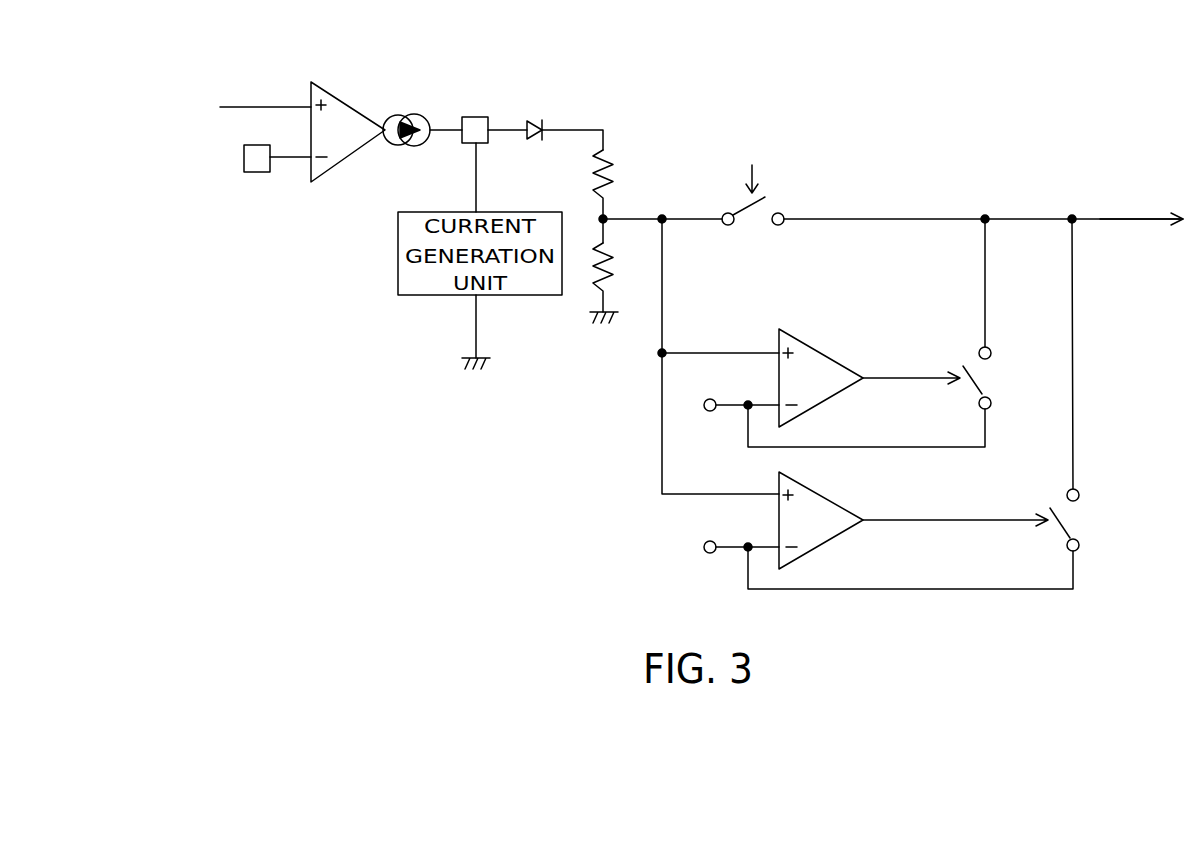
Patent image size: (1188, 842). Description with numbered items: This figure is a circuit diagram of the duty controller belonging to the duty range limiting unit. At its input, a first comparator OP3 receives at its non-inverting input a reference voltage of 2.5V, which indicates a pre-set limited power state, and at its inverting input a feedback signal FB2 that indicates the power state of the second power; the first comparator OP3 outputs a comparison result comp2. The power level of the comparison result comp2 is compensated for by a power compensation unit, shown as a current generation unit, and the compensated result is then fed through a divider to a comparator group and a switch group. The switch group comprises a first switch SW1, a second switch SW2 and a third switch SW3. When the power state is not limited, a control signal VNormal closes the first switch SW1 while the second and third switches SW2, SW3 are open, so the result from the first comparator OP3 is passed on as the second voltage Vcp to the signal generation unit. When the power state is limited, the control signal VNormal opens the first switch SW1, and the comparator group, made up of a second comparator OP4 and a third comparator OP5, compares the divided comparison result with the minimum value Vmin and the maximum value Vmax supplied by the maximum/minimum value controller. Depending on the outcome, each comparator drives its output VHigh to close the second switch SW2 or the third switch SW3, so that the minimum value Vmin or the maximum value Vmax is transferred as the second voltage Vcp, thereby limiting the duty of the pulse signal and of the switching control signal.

The first comparator OP3 is at (352, 105).
The voltage indicating a pre-set limited power state 2.5V is at (265, 93).
The feedback signal FB2 is at (253, 158).
The comparison result comp2 is at (476, 115).
The first switch SW1 is at (753, 227).
The second switch SW2 is at (1001, 314).
The third switch SW3 is at (1088, 385).
The second comparator OP4 is at (822, 353).
The third comparator OP5 is at (832, 501).
The control signal VNormal is at (753, 167).
The second voltage Vcp is at (1141, 234).
The minimum value Vmin is at (727, 392).
The maximum value Vmax is at (727, 535).
The high level signal VHigh is at (955, 438).